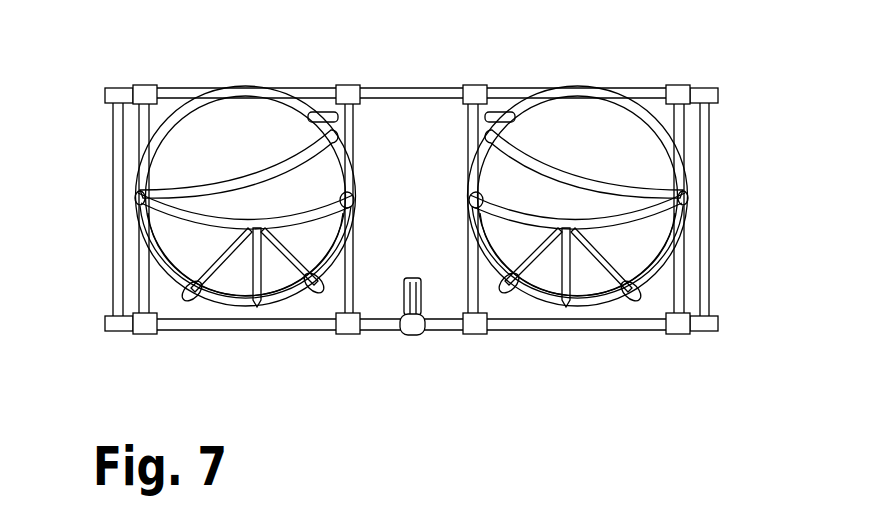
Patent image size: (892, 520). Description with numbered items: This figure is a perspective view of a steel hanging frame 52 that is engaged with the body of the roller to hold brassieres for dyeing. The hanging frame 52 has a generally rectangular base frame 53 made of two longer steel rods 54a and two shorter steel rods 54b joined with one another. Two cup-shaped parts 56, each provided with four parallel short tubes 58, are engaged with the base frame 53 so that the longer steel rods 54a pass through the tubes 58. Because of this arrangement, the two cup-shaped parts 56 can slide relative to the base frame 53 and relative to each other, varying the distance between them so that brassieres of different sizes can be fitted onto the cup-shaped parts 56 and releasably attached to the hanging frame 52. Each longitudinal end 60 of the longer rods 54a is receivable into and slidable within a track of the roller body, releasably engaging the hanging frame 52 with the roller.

The hanging frame 52 is at (380, 330).
The base frame 53 is at (500, 92).
The longer steel rods 54a is at (412, 87).
The shorter steel rods 54b is at (120, 250).
The cup-shaped part 56 is at (259, 170).
The short tubes 58 is at (150, 85).
The longitudinal end 60 is at (115, 88).